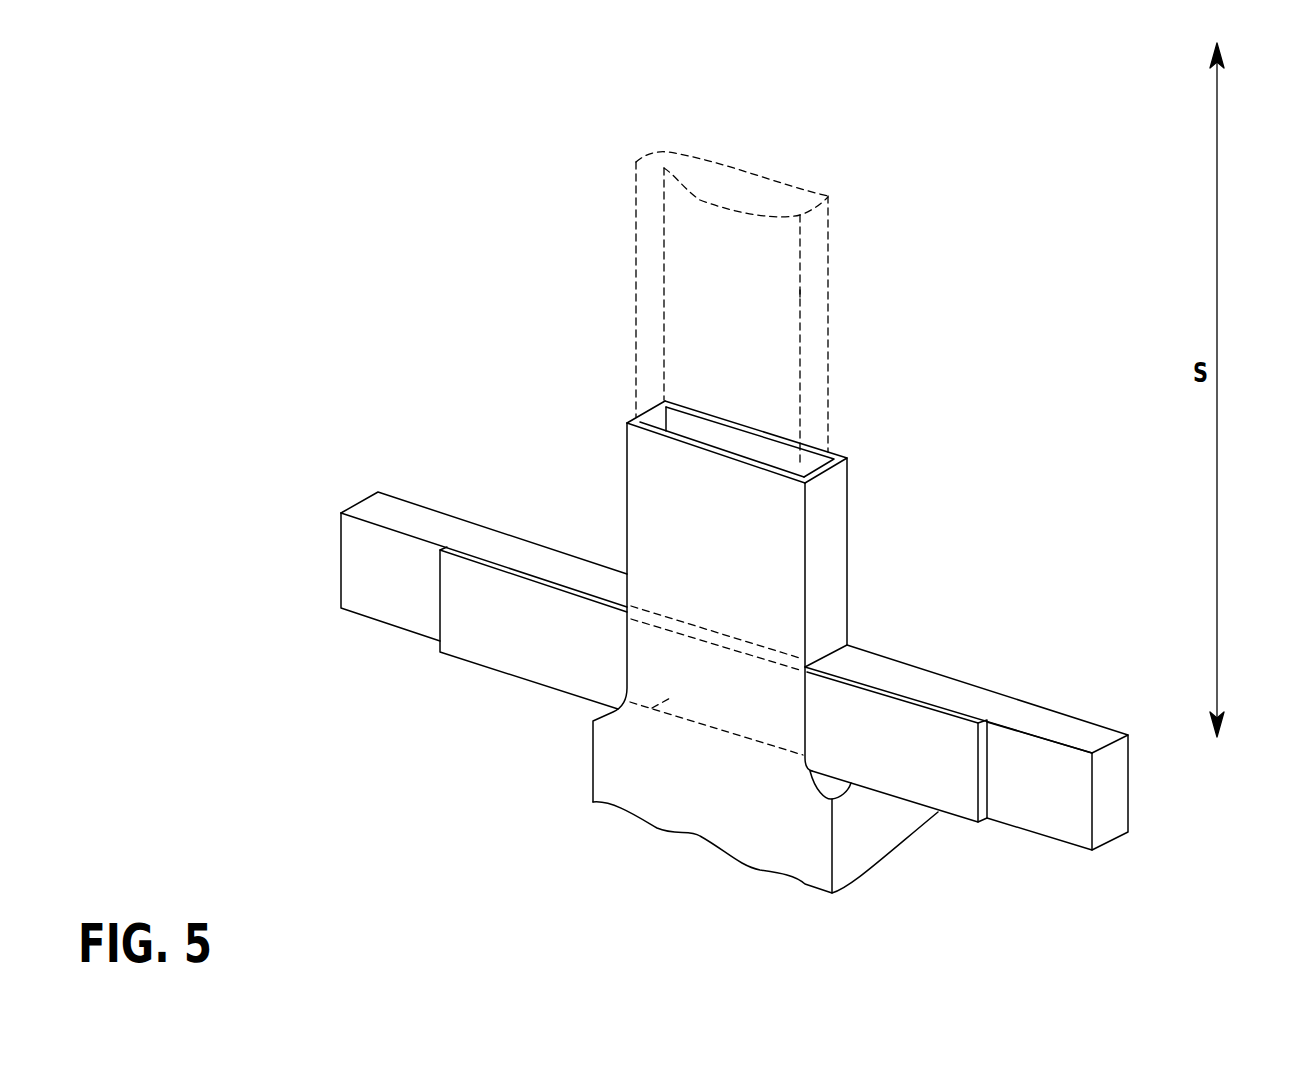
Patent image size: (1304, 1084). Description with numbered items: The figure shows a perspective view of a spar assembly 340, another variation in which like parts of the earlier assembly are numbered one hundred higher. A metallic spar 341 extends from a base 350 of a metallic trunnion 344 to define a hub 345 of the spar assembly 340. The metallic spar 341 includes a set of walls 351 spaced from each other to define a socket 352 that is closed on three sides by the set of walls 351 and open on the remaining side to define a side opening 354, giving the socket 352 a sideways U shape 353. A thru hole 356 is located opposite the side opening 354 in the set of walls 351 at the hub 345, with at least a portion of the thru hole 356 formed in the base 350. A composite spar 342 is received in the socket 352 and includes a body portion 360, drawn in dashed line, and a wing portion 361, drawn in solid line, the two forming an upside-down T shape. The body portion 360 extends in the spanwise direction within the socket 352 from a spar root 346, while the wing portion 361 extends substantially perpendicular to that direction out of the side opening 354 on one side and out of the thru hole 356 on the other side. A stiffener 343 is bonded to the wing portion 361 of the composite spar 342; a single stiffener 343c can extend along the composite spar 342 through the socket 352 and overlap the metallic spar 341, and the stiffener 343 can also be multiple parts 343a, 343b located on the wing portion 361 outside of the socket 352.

The spar assembly 340 is at (358, 103).
The metallic spar 341 is at (732, 534).
The composite spar 342 is at (806, 185).
The stiffener 343 is at (940, 768).
The stiffener part 343a is at (515, 622).
The stiffener part 343b is at (897, 747).
The single stiffener 343c is at (592, 739).
The metallic trunnion 344 is at (600, 683).
The hub 345 is at (665, 789).
The spar root 346 is at (402, 632).
The base 350 is at (712, 783).
The set of walls 351 is at (740, 587).
The socket 352 is at (712, 428).
The sideways U shape 353 is at (748, 432).
The side opening 354 is at (660, 413).
The thru hole 356 is at (830, 781).
The body portion 360 is at (773, 293).
The wing portion 361 is at (883, 668).